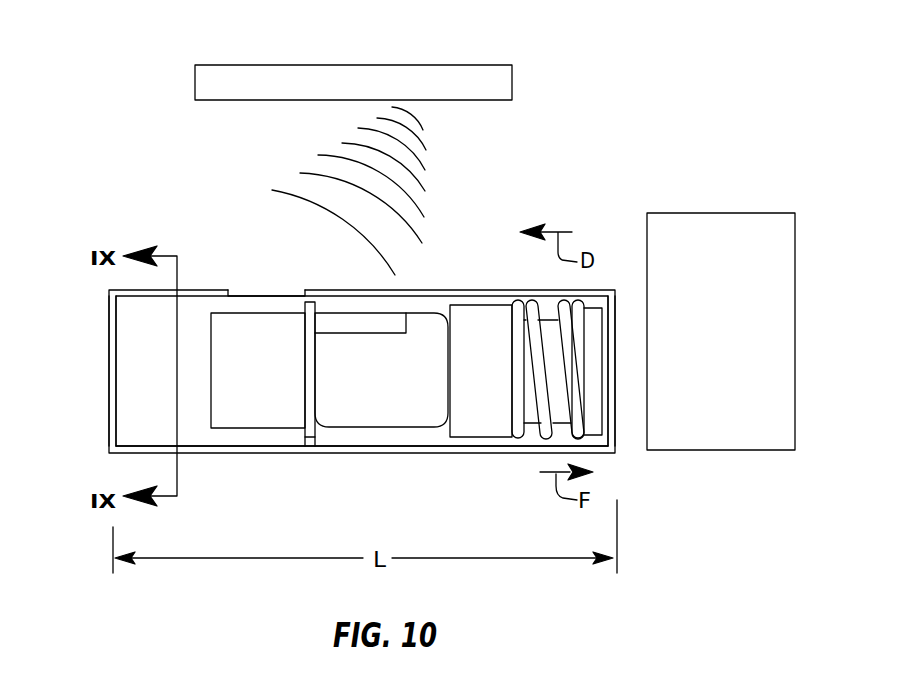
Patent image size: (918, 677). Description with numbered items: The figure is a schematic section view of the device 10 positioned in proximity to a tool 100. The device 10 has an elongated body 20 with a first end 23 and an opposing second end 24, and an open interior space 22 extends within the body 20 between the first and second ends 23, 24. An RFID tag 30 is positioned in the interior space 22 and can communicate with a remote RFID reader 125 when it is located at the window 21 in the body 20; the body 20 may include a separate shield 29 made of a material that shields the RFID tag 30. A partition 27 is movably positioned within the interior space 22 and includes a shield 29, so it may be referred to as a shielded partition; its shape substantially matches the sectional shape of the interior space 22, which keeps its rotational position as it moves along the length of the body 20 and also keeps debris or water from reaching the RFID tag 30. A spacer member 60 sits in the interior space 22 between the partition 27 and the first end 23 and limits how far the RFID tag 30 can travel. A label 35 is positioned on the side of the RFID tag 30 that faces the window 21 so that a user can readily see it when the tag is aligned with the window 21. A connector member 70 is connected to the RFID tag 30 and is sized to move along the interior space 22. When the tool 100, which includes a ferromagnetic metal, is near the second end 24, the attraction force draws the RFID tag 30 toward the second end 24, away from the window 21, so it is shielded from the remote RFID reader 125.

The device 10 is at (115, 172).
The body 20 is at (222, 453).
The window 21 is at (248, 292).
The interior space 22 is at (398, 437).
The first end 23 is at (109, 412).
The second end 24 is at (616, 426).
The partition 27 is at (318, 442).
The shield 29 is at (146, 447).
The RFID tag 30 is at (432, 405).
The label 35 is at (370, 323).
The spacer member 60 is at (243, 357).
The connector member 70 is at (482, 420).
The tool 100 is at (739, 349).
The remote RFID reader 125 is at (495, 87).